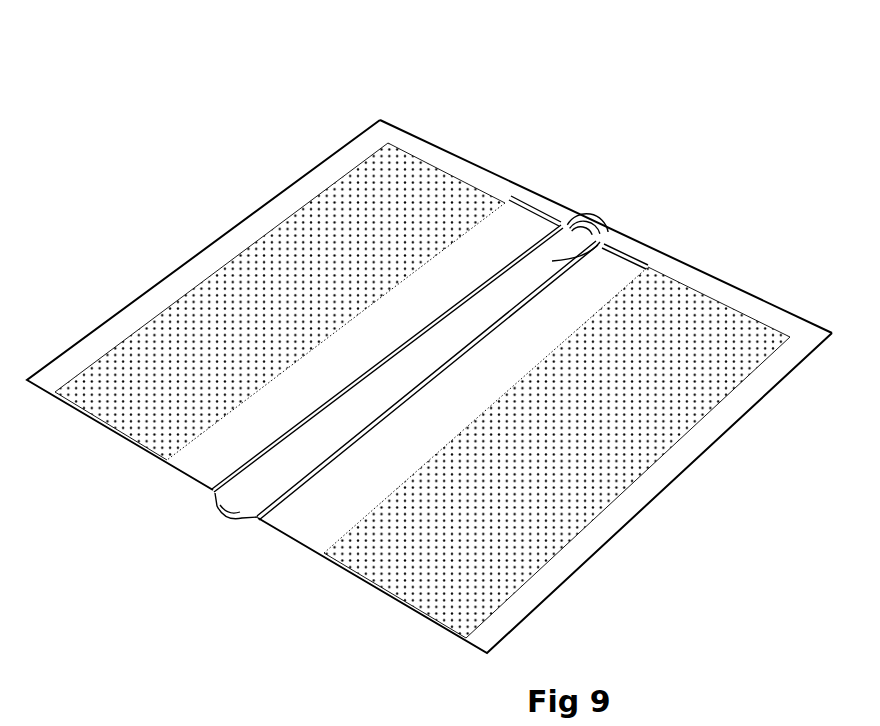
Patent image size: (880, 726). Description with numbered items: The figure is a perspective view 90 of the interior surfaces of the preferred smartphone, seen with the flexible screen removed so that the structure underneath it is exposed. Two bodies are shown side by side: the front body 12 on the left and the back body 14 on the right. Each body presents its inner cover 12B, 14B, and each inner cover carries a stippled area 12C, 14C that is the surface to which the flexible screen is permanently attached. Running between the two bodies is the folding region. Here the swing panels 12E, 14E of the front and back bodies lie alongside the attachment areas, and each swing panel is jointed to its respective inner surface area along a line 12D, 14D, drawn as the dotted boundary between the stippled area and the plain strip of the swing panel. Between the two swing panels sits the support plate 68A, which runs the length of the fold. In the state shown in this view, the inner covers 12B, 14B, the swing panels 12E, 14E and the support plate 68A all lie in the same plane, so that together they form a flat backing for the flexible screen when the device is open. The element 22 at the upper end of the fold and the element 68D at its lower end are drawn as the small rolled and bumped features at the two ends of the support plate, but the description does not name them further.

The perspective view 90 is at (277, 147).
The front body 12 is at (213, 243).
The inner cover 12B is at (150, 308).
The area 12C is at (415, 177).
The line 12D is at (478, 221).
The swing panel 12E is at (516, 233).
The back body 14 is at (648, 505).
The inner cover 14B is at (715, 423).
The area 14C is at (410, 565).
The line 14D is at (340, 538).
The swing panel 14E is at (298, 515).
The hinge 22 is at (613, 219).
The support plate 68A is at (622, 254).
The hinge portion 68D is at (222, 508).